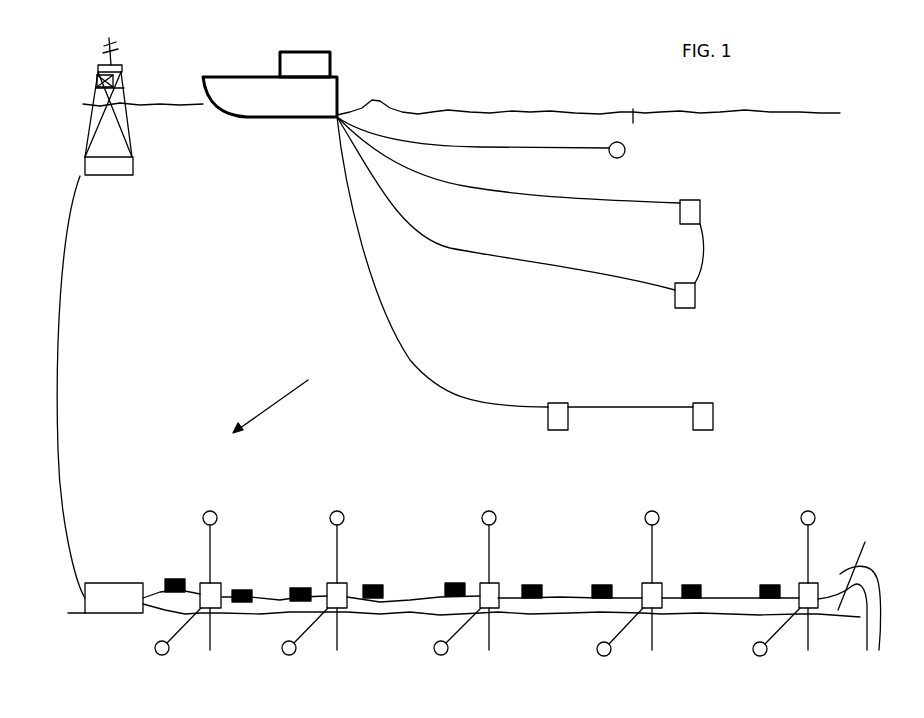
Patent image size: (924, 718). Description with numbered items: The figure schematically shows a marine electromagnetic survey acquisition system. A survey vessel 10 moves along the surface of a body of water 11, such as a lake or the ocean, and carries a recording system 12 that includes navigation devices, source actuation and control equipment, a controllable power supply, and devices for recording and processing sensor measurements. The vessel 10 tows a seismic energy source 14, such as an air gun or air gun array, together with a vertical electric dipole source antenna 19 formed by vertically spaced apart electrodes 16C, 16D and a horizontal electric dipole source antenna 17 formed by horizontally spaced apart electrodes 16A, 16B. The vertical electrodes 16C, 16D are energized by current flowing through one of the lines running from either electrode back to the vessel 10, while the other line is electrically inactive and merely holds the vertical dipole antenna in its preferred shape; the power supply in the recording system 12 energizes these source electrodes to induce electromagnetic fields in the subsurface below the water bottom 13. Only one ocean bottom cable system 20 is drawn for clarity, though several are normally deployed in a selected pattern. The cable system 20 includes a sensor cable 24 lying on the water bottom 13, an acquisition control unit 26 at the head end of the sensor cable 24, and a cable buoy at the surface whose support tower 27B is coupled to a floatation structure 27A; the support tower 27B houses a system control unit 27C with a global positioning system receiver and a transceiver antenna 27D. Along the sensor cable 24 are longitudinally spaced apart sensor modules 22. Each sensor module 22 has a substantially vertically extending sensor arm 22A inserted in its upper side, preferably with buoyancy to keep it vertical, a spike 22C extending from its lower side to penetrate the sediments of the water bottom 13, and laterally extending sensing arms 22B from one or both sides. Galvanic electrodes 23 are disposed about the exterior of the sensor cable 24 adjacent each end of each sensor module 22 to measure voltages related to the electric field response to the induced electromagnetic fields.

The survey vessel 10 is at (237, 85).
The body of water 11 is at (553, 108).
The recording system 12 is at (312, 54).
The water bottom 13 is at (80, 614).
The seismic energy source 14 is at (626, 150).
The electrode 16A is at (558, 403).
The electrode 16B is at (703, 412).
The electrode 16C is at (698, 212).
The electrode 16D is at (696, 298).
The horizontal electric dipole source antenna 17 is at (380, 310).
The vertical electric dipole source antenna 19 is at (533, 262).
The ocean bottom cable system 20 is at (270, 391).
The sensor module 22 is at (211, 592).
The sensor arm 22A is at (238, 500).
The sensing arm 22B is at (156, 653).
The spike 22C is at (213, 627).
The galvanic electrode 23 is at (772, 585).
The sensor cable 24 is at (155, 597).
The acquisition control unit 26 is at (105, 592).
The floatation structure 27A is at (125, 163).
The support tower 27B is at (122, 100).
The system control unit 27C is at (97, 82).
The transceiver antenna 27D is at (107, 63).